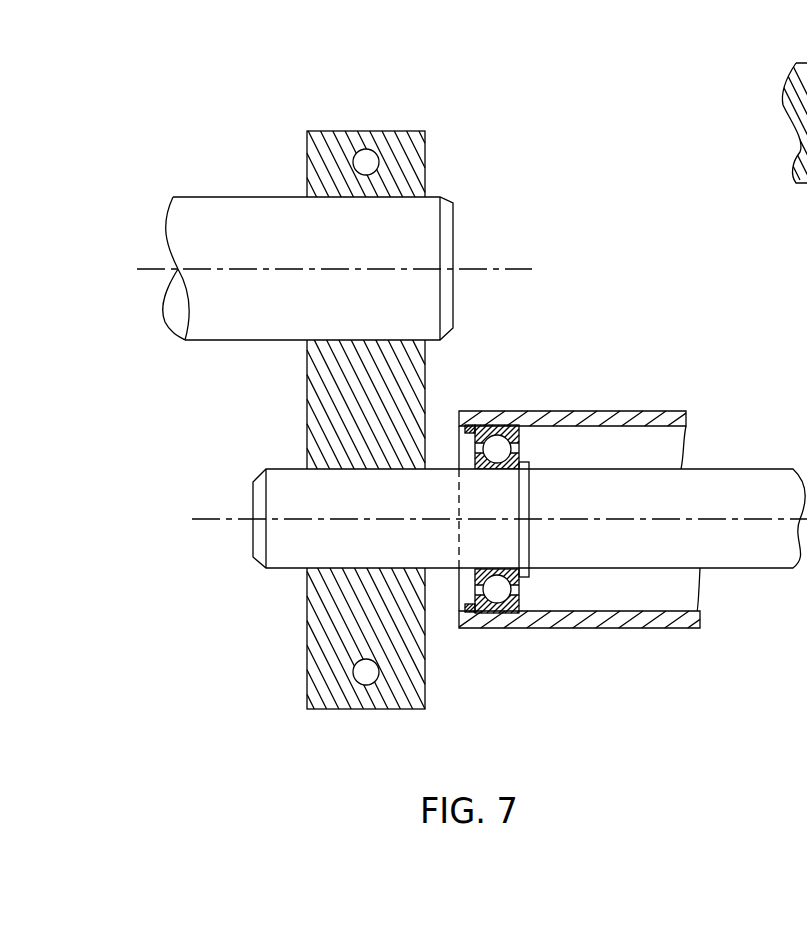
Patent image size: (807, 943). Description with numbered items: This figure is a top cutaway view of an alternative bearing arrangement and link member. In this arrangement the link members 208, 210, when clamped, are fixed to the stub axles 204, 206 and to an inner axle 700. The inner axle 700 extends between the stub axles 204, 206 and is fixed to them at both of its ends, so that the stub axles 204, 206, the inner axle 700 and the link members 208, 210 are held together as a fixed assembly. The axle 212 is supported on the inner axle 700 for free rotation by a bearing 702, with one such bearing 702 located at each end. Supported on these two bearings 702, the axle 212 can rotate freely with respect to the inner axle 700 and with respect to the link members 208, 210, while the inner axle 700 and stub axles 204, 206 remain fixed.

The stub axle 204 is at (360, 232).
The stub axle 206 is at (408, 231).
The link member 208 is at (445, 420).
The link member 210 is at (407, 377).
The axle 212 is at (667, 423).
The inner axle 700 is at (747, 542).
The bearing 702 is at (512, 431).